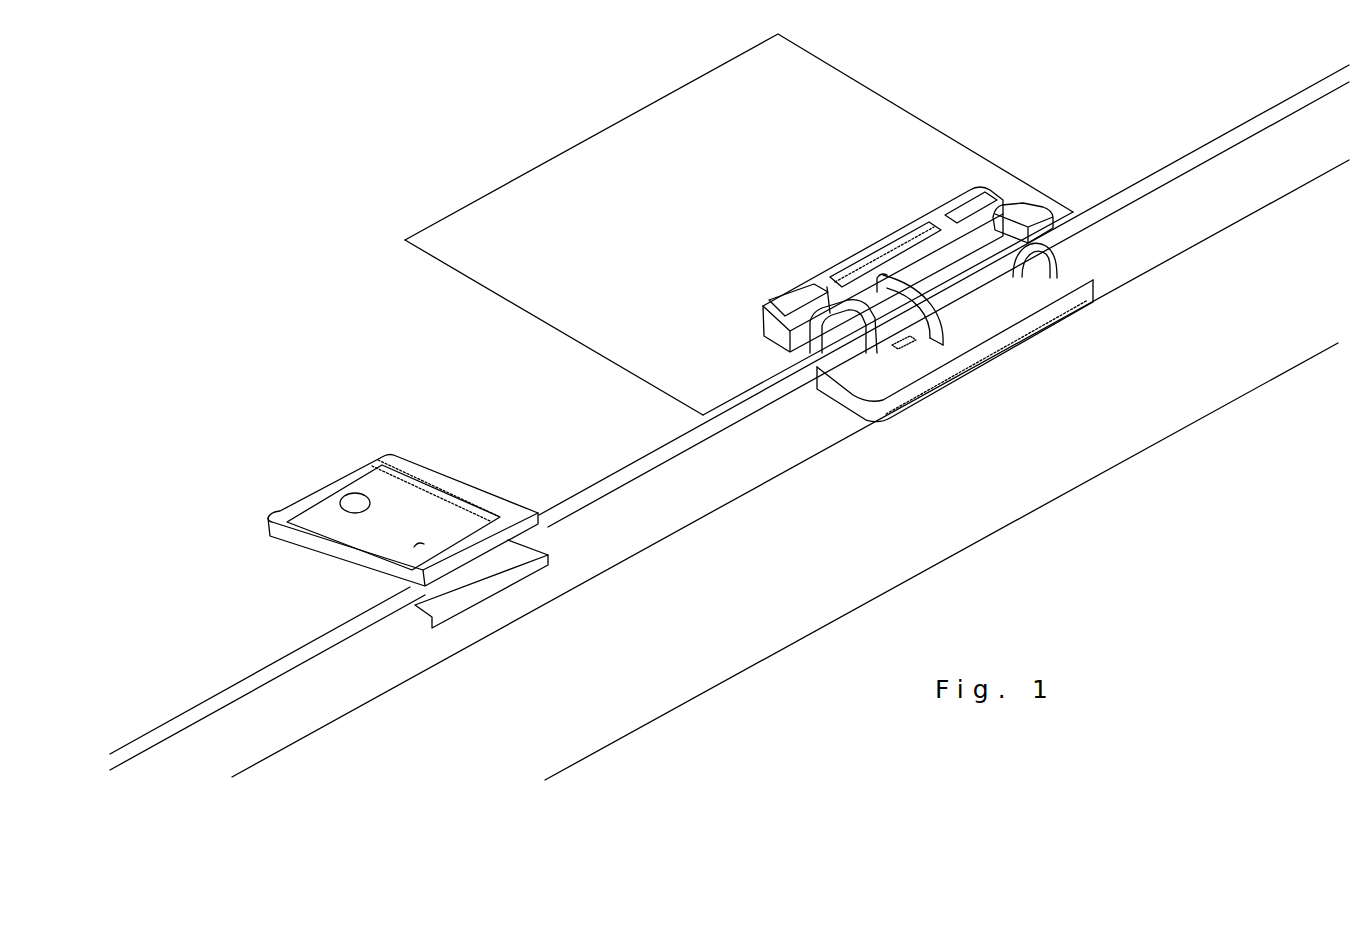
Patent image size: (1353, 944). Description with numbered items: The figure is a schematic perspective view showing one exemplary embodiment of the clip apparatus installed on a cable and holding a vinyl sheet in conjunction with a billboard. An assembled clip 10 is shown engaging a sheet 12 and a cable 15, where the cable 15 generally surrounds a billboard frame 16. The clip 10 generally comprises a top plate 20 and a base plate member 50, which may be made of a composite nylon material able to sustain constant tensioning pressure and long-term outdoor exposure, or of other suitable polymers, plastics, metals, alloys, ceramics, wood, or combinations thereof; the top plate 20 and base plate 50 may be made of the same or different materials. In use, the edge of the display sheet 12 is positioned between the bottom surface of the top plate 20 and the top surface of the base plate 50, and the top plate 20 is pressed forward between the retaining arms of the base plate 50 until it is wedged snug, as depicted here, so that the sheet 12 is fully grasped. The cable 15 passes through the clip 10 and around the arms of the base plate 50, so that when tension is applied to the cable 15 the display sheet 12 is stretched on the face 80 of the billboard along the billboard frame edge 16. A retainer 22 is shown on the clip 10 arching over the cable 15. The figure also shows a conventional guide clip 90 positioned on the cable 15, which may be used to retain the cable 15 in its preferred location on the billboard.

The clip 10 is at (1043, 186).
The sheet 12 is at (587, 165).
The cable 15 is at (662, 457).
The billboard frame 16 is at (805, 463).
The top plate 20 is at (820, 247).
The arch retainer 22 is at (937, 267).
The base plate member 50 is at (992, 379).
The face 80 is at (410, 318).
The guide clip 90 is at (372, 488).